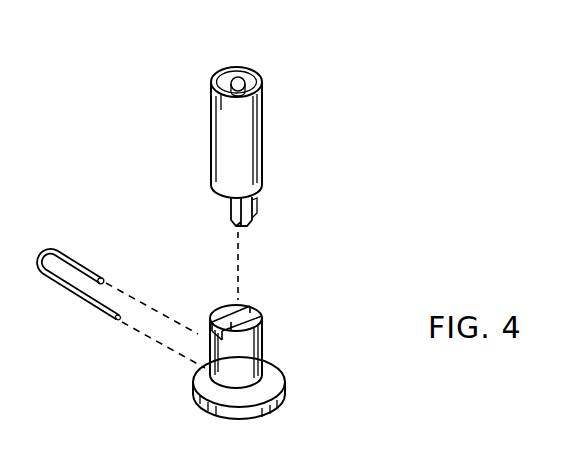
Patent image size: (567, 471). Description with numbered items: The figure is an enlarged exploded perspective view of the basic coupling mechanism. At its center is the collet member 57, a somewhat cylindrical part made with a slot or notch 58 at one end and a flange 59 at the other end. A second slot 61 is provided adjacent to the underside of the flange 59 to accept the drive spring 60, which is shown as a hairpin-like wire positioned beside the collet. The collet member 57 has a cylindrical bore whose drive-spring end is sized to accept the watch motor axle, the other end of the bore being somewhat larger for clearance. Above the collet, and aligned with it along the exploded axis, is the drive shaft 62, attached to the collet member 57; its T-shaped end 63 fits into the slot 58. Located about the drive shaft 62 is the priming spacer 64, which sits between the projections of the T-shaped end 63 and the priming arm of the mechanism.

The collet member 57 is at (266, 346).
The slot or notch 58 is at (217, 306).
The flange 59 is at (203, 406).
The drive spring 60 is at (72, 250).
The second slot 61 is at (247, 393).
The drive shaft 62 is at (240, 66).
The T-shaped end 63 is at (252, 215).
The priming spacer 64 is at (262, 112).